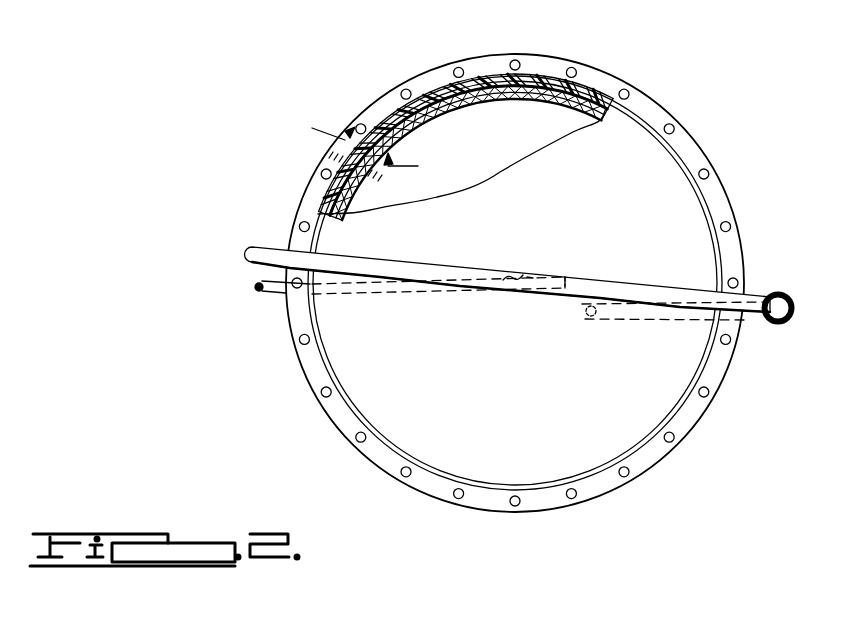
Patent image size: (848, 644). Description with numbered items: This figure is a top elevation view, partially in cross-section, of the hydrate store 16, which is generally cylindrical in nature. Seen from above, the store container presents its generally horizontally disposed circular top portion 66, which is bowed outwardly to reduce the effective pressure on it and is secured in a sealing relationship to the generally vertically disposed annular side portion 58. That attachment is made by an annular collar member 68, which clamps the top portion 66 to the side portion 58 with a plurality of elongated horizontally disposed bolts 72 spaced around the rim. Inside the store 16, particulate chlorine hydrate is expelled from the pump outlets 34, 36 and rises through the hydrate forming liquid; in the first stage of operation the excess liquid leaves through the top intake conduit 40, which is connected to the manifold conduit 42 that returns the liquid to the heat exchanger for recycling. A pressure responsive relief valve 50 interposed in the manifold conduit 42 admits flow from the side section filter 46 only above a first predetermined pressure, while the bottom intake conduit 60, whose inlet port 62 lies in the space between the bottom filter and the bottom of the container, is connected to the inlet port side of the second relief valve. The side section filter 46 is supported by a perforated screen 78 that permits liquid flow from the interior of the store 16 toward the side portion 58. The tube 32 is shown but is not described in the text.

The hydrate store 16 is at (493, 262).
The inner tube 32 is at (268, 294).
The pump outlet 34 is at (471, 274).
The pump outlet 36 is at (563, 278).
The top intake conduit 40 is at (530, 276).
The manifold conduit 42 is at (278, 214).
The side section filter 46 is at (482, 95).
The relief valve 50 is at (774, 290).
The side portion 58 is at (481, 75).
The bottom intake conduit 60 is at (648, 322).
The inlet port 62 is at (586, 324).
The top portion 66 is at (350, 346).
The annular collar member 68 is at (647, 105).
The bolt 72 is at (678, 124).
The screen 78 is at (385, 120).